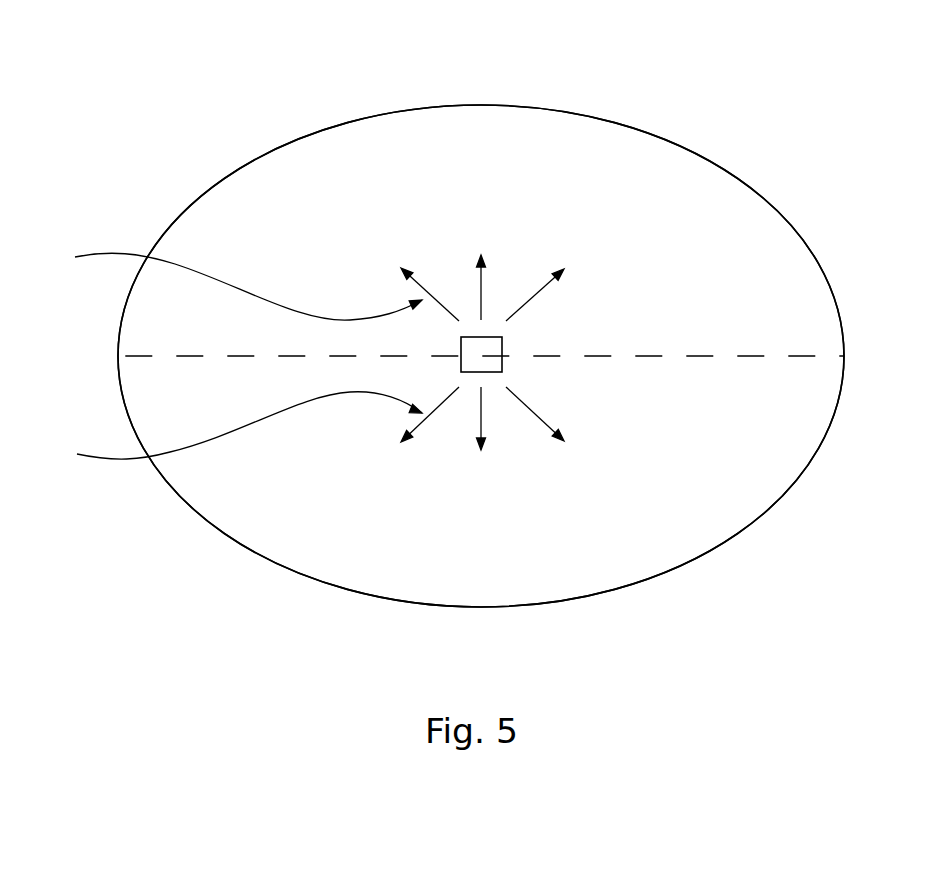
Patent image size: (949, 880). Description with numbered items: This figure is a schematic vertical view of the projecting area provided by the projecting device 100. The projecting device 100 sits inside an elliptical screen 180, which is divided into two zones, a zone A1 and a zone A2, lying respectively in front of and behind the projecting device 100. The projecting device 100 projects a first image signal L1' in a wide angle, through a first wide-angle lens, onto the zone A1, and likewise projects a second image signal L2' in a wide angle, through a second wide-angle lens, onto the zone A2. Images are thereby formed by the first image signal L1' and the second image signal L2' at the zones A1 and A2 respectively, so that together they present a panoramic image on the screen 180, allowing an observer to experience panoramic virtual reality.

The screen 180 is at (479, 104).
The zone A1 is at (730, 167).
The zone A2 is at (728, 543).
The projecting device 100 is at (488, 363).
The first image signal L1' is at (228, 283).
The second image signal L2' is at (230, 429).